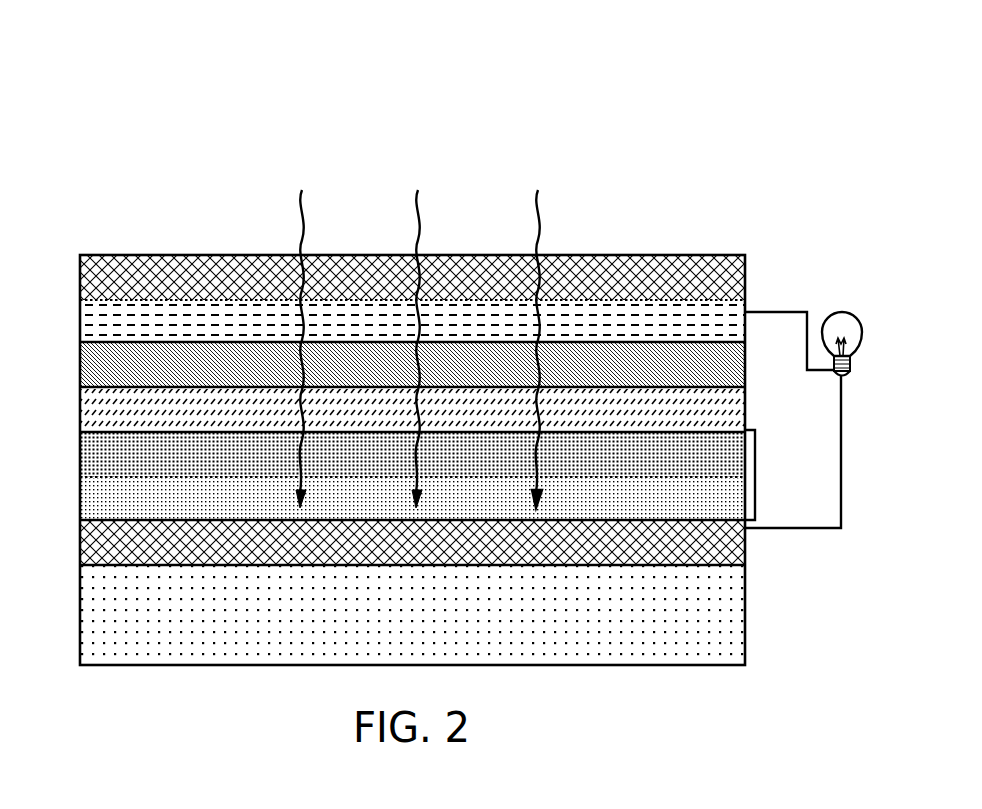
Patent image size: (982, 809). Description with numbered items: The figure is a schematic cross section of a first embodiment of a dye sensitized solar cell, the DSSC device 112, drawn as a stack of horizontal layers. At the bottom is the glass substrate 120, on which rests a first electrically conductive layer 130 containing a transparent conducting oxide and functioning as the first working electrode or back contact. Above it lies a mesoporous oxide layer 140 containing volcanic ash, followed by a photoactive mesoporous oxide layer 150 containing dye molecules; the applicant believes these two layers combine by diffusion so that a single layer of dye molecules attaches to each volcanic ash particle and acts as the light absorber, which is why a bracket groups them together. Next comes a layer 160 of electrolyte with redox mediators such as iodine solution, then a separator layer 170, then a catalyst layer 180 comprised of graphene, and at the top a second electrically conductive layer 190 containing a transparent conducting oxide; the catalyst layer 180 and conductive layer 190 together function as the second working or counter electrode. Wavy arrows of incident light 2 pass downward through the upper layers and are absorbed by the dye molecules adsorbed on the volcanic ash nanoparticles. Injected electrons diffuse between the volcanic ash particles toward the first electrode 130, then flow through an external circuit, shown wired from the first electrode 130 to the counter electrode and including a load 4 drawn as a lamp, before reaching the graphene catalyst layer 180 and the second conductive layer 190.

The DSSC device 112 is at (611, 92).
The second electrically conductive layer 190 is at (80, 279).
The catalyst layer 180 is at (80, 320).
The separator layer 170 is at (80, 365).
The layer of electrolyte 160 is at (80, 410).
The photoactive mesoporous oxide layer 150 is at (80, 457).
The mesoporous oxide layer 140 is at (80, 500).
The first electrically conductive layer 130 is at (80, 545).
The glass substrate 120 is at (80, 589).
The incident light 2 is at (304, 203).
The load 4 is at (841, 312).